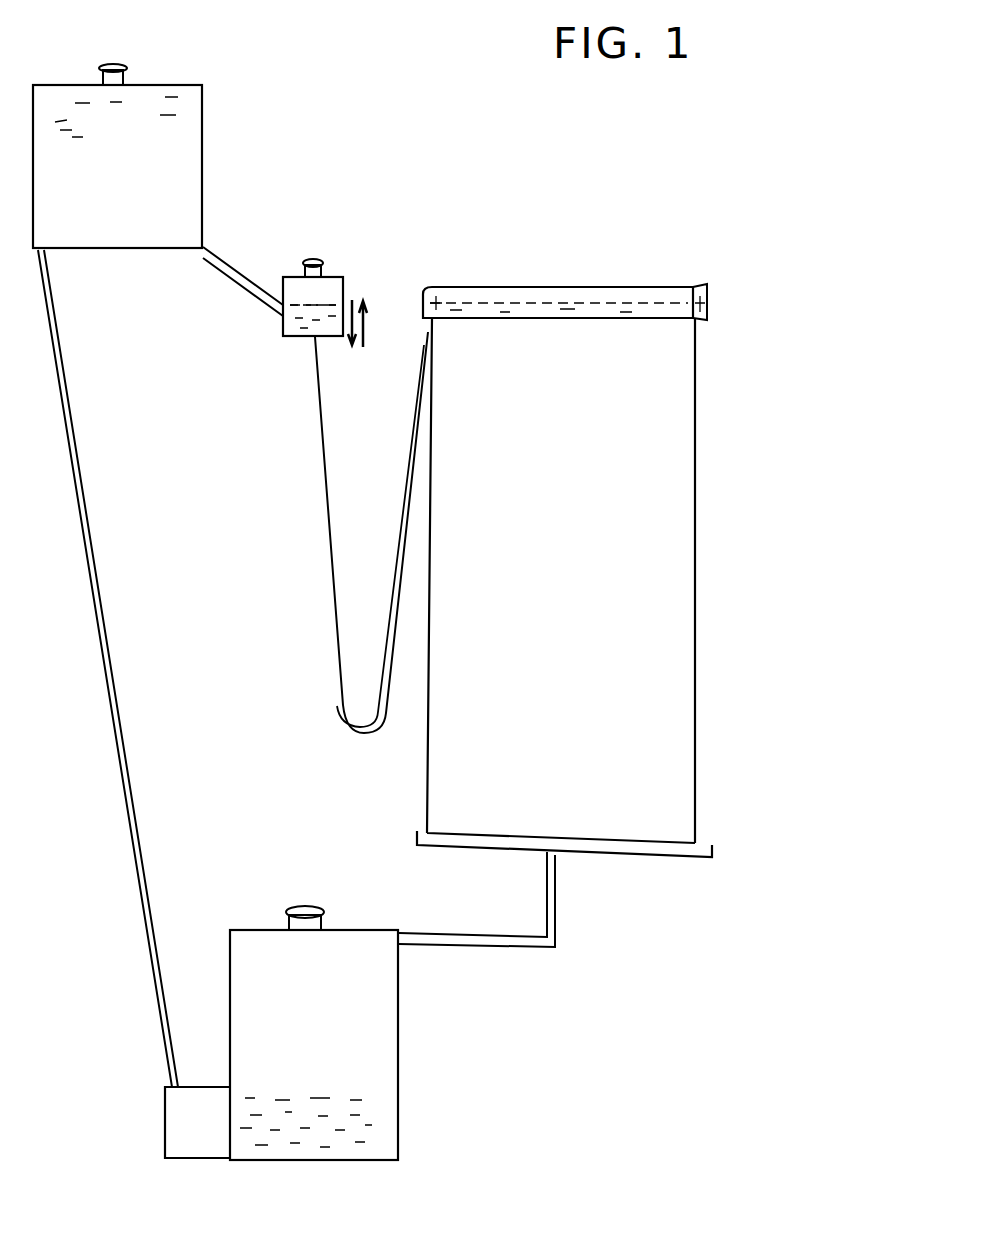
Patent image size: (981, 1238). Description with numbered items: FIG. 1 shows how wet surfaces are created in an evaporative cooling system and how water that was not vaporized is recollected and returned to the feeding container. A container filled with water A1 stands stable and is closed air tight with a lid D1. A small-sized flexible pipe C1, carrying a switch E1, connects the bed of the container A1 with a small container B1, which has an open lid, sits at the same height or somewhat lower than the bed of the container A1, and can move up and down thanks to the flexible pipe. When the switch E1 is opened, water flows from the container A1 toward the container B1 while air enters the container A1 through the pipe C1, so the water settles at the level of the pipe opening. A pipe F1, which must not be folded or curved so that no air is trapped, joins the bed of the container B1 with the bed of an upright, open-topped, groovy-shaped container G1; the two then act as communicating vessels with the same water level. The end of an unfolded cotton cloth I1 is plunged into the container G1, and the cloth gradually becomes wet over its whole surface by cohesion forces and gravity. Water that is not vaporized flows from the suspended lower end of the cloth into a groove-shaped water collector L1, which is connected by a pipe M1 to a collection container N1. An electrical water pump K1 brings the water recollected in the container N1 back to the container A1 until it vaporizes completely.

The container filled with water A1 is at (203, 145).
The lid D1 is at (128, 64).
The switch E1 is at (228, 262).
The small container B1 is at (345, 285).
The small-sized flexible pipe C1 is at (283, 305).
The pipe F1 is at (326, 524).
The groovy-shaped container G1 is at (707, 302).
The cotton cloth I1 is at (697, 575).
The water collector L1 is at (714, 851).
The pipe M1 is at (556, 897).
The collection container N1 is at (399, 1049).
The electrical water pump K1 is at (165, 1122).